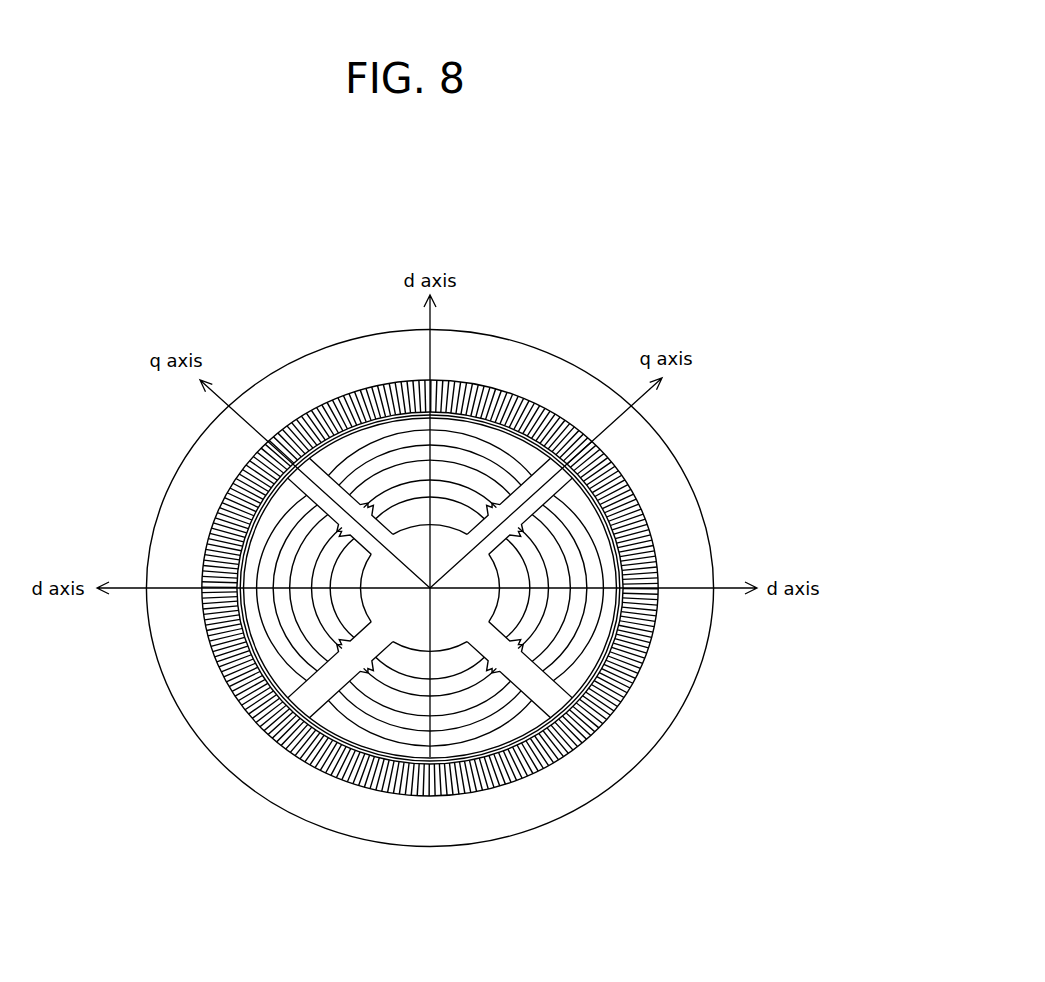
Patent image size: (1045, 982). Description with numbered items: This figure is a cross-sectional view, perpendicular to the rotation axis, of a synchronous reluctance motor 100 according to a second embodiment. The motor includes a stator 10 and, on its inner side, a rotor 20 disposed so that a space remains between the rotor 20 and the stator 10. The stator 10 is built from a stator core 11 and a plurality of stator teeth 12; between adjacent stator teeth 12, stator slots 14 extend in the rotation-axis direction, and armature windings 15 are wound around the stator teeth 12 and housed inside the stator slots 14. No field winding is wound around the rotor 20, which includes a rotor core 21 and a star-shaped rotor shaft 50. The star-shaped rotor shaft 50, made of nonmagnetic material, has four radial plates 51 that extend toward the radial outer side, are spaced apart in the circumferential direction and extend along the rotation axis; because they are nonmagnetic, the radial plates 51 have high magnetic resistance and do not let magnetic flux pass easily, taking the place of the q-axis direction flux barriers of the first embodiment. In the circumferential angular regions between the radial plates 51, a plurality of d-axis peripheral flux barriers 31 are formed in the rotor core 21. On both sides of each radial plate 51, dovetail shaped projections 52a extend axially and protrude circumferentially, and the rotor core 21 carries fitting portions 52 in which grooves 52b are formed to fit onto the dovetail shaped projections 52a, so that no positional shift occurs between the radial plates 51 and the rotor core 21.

The synchronous reluctance motor 100 is at (551, 262).
The stator 10 is at (174, 480).
The stator core 11 is at (158, 516).
The stator teeth 12 is at (290, 420).
The stator slots 14 is at (318, 408).
The armature windings 15 is at (377, 392).
The rotor 20 is at (570, 704).
The rotor core 21 is at (527, 543).
The d-axis peripheral flux barriers 31 is at (590, 665).
The star-shaped rotor shaft 50 is at (343, 617).
The radial plates 51 is at (482, 648).
The fitting portions 52 is at (368, 676).
The dovetail shaped projections 52a is at (488, 665).
The grooves 52b is at (517, 655).